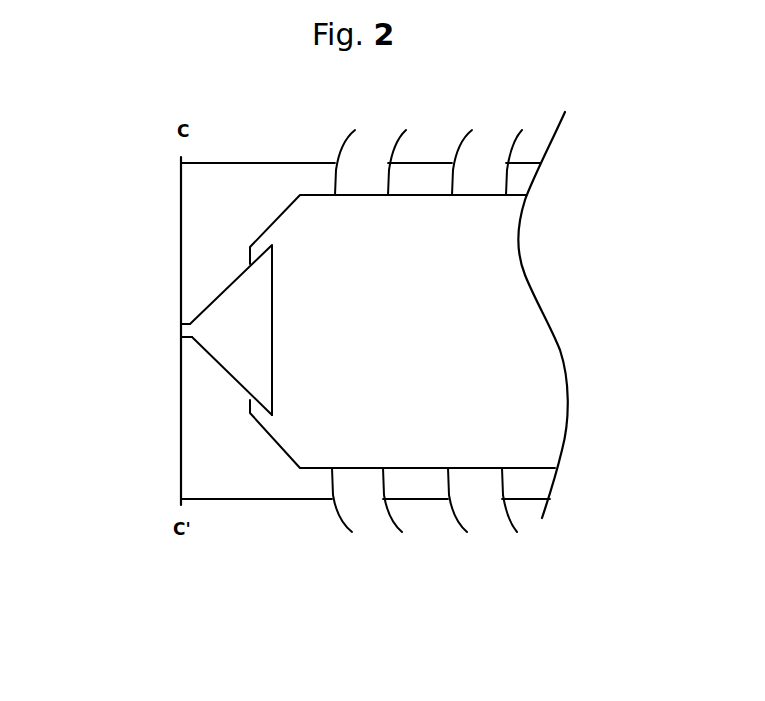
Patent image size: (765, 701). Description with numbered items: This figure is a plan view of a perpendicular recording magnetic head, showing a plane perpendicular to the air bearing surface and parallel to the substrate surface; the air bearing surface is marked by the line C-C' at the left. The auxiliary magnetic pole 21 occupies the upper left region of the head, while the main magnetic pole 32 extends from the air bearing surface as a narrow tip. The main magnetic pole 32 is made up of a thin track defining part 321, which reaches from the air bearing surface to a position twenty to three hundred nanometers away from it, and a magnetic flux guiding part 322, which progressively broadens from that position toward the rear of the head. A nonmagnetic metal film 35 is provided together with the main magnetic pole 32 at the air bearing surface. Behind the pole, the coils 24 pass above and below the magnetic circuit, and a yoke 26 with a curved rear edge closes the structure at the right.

The auxiliary magnetic pole 21 is at (208, 192).
The coils 24 is at (375, 143).
The yoke 26 is at (538, 343).
The main magnetic pole 32 is at (181, 330).
The nonmagnetic metal film 35 is at (146, 308).
The track defining part 321 is at (187, 322).
The magnetic flux guiding part 322 is at (222, 347).